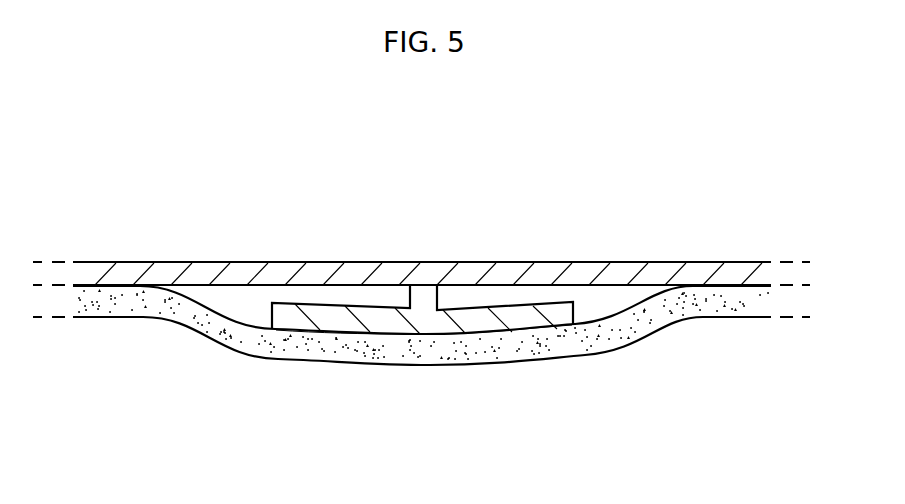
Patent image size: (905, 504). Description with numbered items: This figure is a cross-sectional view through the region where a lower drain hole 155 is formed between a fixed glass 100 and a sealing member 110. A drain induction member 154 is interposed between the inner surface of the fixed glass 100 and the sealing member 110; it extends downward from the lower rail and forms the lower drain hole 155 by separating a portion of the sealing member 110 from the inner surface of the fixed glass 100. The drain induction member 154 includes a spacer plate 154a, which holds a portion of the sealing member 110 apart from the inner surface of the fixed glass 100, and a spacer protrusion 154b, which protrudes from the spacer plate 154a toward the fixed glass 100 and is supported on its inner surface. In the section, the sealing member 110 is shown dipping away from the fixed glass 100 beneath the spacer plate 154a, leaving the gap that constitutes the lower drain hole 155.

The fixed glass 100 is at (501, 275).
The sealing member 110 is at (302, 347).
The drain induction member 154 is at (422, 333).
The spacer plate 154a is at (325, 312).
The spacer protrusion 154b is at (424, 338).
The lower drain hole 155 is at (390, 302).